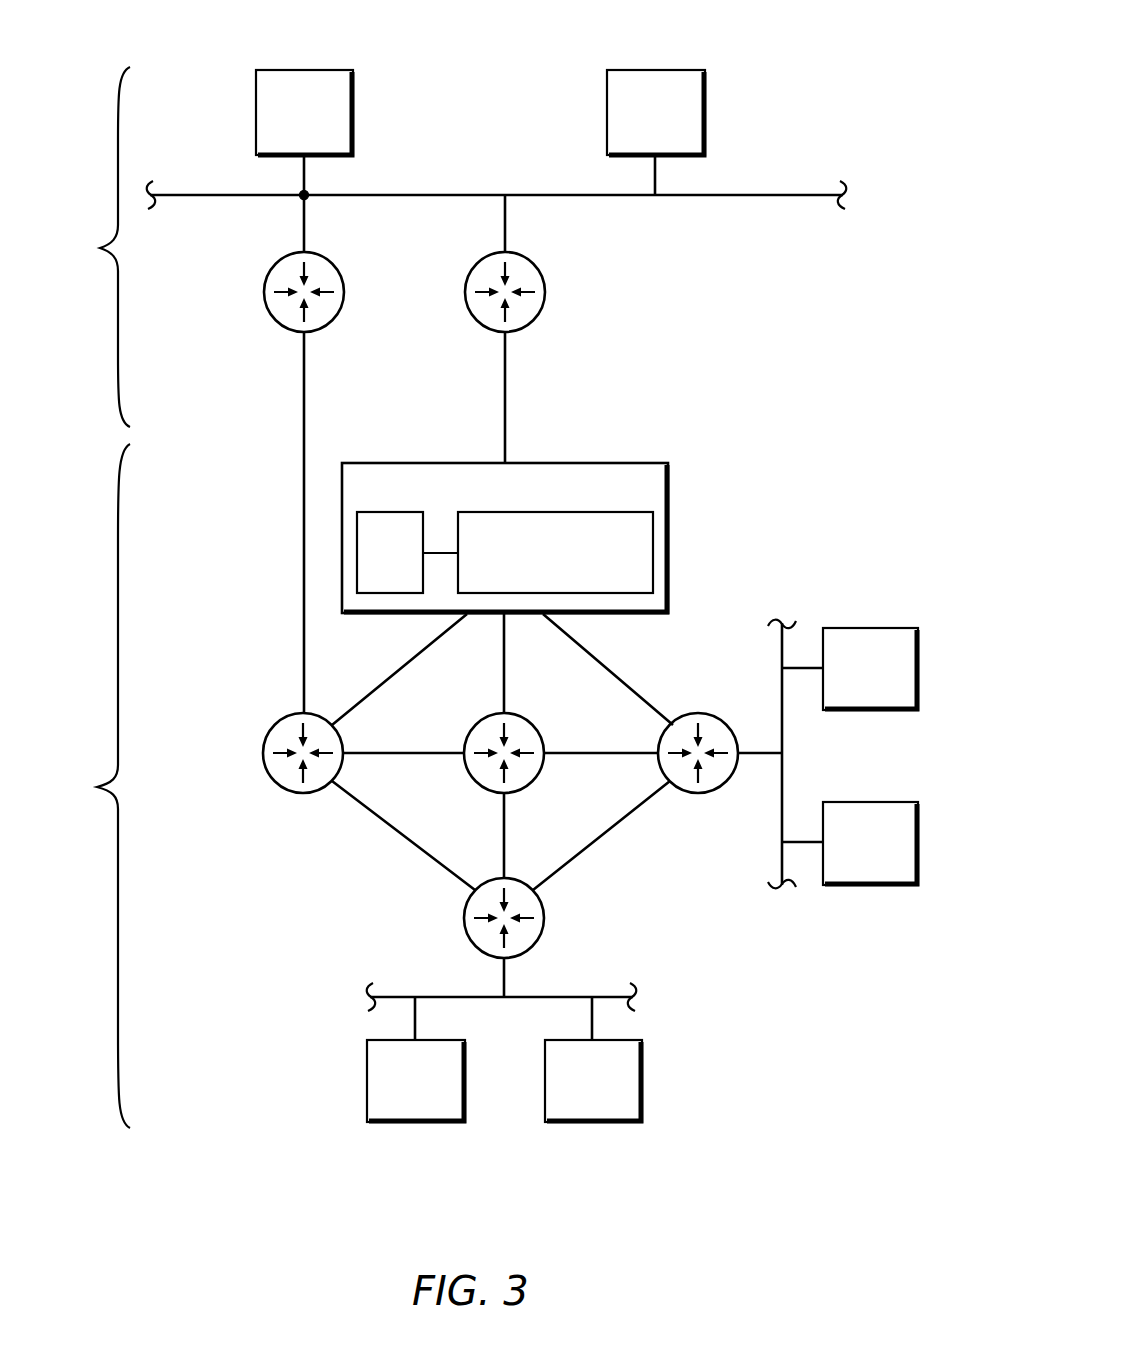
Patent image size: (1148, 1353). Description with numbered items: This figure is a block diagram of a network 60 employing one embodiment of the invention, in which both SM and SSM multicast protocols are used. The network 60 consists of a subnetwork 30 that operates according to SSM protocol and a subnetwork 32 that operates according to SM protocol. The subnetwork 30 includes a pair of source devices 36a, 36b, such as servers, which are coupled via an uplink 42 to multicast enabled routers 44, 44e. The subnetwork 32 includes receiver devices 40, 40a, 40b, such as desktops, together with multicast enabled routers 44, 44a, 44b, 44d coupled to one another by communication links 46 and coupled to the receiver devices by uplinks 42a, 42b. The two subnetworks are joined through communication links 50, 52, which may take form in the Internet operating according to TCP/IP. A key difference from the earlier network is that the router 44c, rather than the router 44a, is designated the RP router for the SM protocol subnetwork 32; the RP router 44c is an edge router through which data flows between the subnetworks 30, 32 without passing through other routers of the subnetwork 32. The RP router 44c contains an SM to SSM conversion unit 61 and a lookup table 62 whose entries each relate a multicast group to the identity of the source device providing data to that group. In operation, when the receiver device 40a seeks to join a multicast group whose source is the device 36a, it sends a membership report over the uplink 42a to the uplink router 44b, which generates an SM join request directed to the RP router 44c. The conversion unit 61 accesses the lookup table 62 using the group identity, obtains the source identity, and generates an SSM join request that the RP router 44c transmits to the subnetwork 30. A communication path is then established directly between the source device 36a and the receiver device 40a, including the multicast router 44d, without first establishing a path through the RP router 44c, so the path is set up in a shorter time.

The network 60 is at (845, 40).
The subnetwork 30 is at (98, 247).
The subnetwork 32 is at (98, 786).
The source device 36a is at (290, 70).
The source device 36b is at (638, 70).
The uplink 42 is at (405, 195).
The uplink 42a is at (533, 997).
The uplink 42b is at (784, 770).
The multicast enabled router 44 is at (545, 280).
The router 44a is at (486, 716).
The uplink router 44b is at (465, 925).
The RP router 44c is at (620, 463).
The multicast router 44d is at (263, 753).
The router 44e is at (334, 265).
The communication link 46 is at (386, 676).
The communication link 50 is at (505, 414).
The communication link 52 is at (304, 430).
The SM to SSM conversion unit 61 is at (517, 512).
The lookup table 62 is at (382, 512).
The receiver device 40 is at (878, 628).
The receiver device 40a is at (400, 1122).
The receiver device 40b is at (600, 1122).